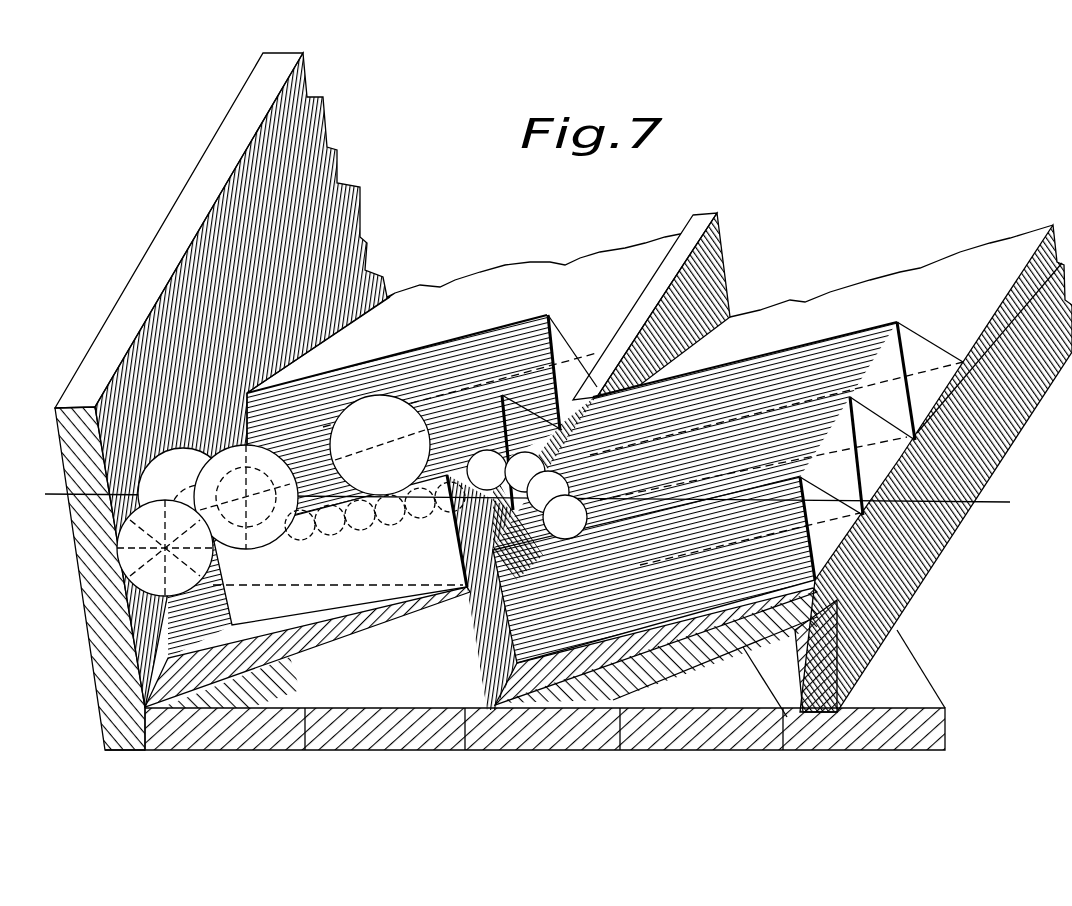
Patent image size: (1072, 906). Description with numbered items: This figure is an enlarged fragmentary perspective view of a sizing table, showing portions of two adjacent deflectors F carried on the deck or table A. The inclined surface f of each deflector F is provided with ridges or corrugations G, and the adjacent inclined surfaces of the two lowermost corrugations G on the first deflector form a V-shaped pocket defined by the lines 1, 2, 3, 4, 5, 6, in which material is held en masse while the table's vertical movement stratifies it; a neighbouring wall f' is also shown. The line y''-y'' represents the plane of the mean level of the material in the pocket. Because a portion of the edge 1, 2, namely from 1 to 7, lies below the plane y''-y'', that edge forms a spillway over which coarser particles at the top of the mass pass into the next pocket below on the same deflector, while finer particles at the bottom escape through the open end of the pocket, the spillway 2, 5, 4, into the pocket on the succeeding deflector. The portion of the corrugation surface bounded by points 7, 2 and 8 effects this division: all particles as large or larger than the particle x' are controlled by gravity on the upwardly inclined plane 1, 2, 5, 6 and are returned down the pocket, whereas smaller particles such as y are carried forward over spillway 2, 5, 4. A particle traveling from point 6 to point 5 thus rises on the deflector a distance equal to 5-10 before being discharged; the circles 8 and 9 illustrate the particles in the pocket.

The pocket corner point 1 is at (165, 548).
The pocket corner point 2 is at (455, 463).
The pocket corner point 3 is at (207, 470).
The pocket corner point 4 is at (507, 393).
The pocket corner point 5 is at (513, 510).
The pocket corner point 6 is at (215, 568).
The spillway end point 7 is at (352, 487).
The dividing surface point 8 is at (487, 470).
The ball 9 is at (525, 472).
The discharge height point 10 is at (468, 590).
The deck or table A is at (690, 752).
The deflector F is at (554, 401).
The inclined surface of deflector f is at (601, 329).
The partition wall f' is at (822, 462).
The ridge or corrugation G is at (505, 340).
The particle x' is at (380, 434).
The particle y is at (400, 461).
The mean level plane line y'' is at (524, 500).